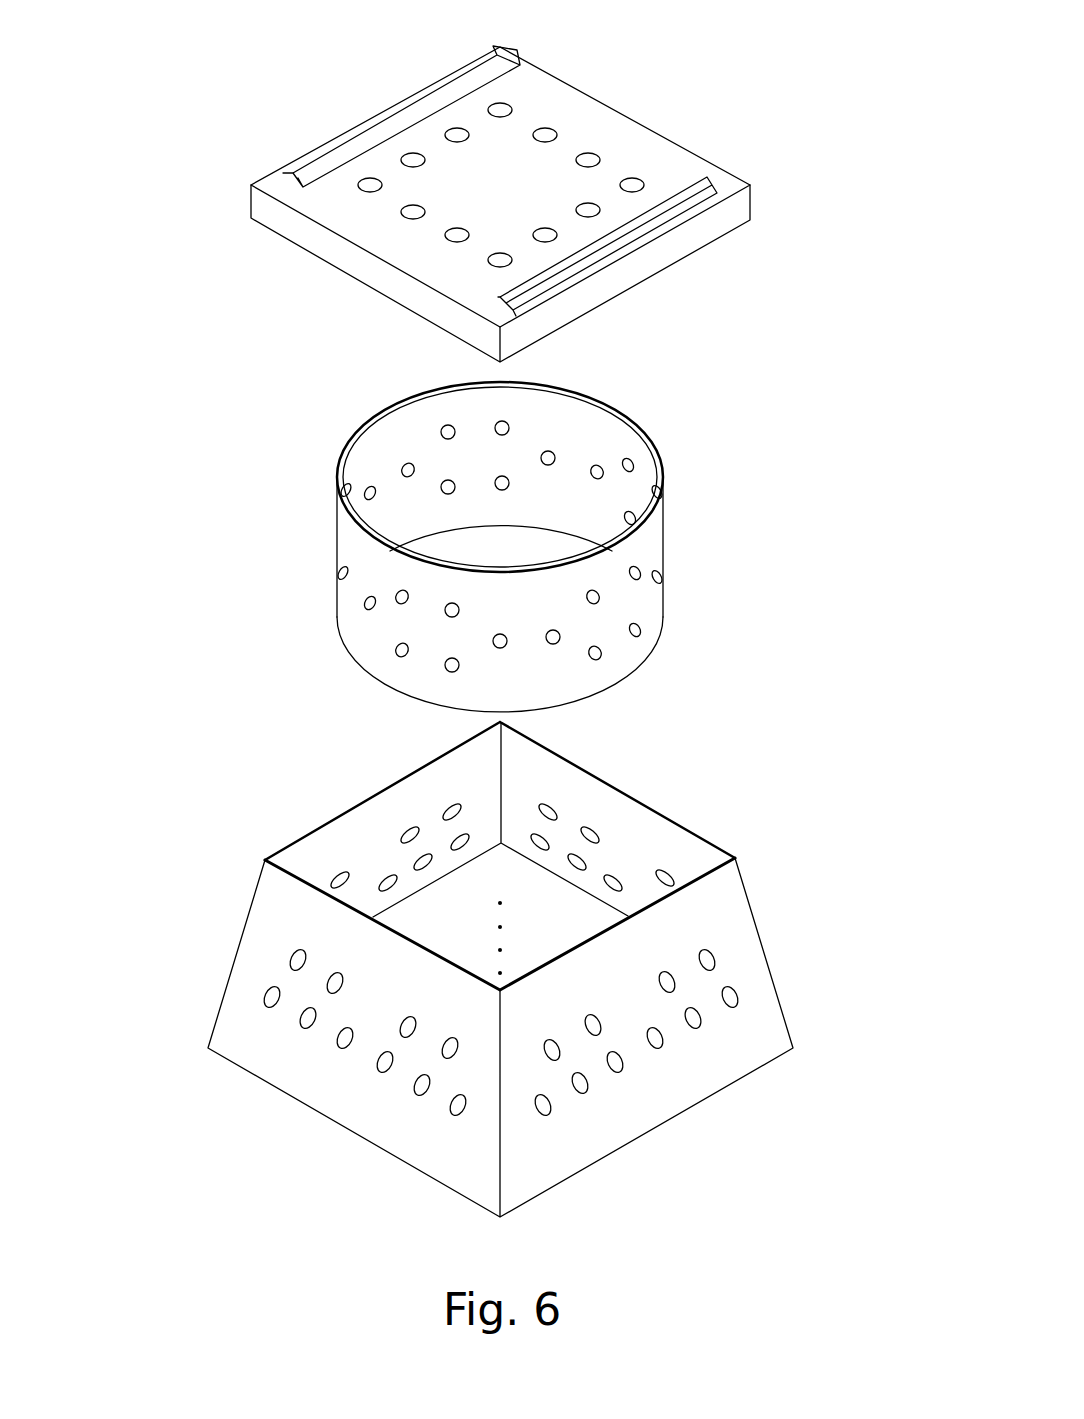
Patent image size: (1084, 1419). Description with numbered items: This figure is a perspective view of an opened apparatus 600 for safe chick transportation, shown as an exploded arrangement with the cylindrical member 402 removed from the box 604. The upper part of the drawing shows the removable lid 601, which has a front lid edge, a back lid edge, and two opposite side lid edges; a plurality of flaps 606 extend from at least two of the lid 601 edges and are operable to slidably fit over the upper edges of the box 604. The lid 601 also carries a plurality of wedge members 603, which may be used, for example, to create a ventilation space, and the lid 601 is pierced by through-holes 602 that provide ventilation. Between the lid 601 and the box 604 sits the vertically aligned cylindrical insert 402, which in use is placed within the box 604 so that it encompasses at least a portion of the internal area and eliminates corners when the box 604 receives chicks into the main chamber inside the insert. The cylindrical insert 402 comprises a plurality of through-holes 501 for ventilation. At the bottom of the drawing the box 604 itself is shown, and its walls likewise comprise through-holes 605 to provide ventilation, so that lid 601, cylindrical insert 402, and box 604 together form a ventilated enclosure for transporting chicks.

The opened apparatus 600 is at (192, 112).
The removable lid 601 is at (672, 168).
The through-holes 602 is at (405, 210).
The wedge members 603 is at (498, 66).
The flaps 606 is at (688, 238).
The cylindrical insert 402 is at (633, 418).
The through-holes 501 is at (600, 652).
The box 604 is at (328, 826).
The through-holes 605 is at (716, 955).